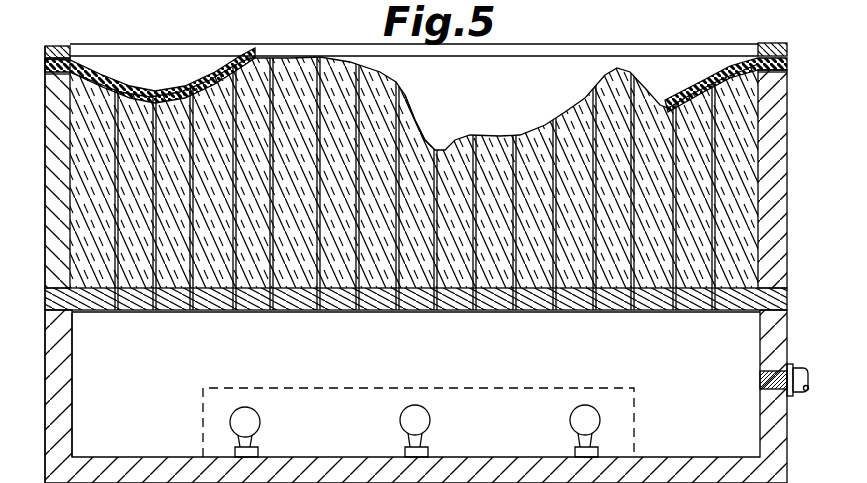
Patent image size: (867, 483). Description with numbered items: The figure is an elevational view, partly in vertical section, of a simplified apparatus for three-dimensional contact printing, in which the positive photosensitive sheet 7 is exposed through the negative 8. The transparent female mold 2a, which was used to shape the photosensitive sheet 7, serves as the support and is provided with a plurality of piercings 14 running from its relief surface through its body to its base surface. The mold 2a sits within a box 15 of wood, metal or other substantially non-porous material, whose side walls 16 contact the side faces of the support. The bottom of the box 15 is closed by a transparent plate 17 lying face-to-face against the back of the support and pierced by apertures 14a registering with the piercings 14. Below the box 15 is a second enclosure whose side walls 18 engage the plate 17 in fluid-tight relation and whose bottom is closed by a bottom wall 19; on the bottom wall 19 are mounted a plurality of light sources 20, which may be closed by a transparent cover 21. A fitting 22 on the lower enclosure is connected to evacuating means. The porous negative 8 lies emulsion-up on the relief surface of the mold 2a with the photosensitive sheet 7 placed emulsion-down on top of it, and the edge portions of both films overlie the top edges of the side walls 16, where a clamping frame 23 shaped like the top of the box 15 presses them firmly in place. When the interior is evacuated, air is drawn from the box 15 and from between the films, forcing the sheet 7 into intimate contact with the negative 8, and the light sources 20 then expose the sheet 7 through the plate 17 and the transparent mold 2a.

The female mold 2a is at (427, 124).
The photosensitive sheet 7 is at (117, 70).
The negative 8 is at (122, 92).
The piercings 14 is at (296, 244).
The apertures 14a is at (292, 310).
The box 15 is at (38, 224).
The side walls 16 is at (58, 238).
The transparent plate 17 is at (121, 313).
The side walls 18 is at (66, 382).
The bottom wall 19 is at (112, 460).
The light sources 20 is at (245, 407).
The transparent cover 21 is at (462, 388).
The fitting 22 is at (765, 380).
The clamping frame 23 is at (60, 46).